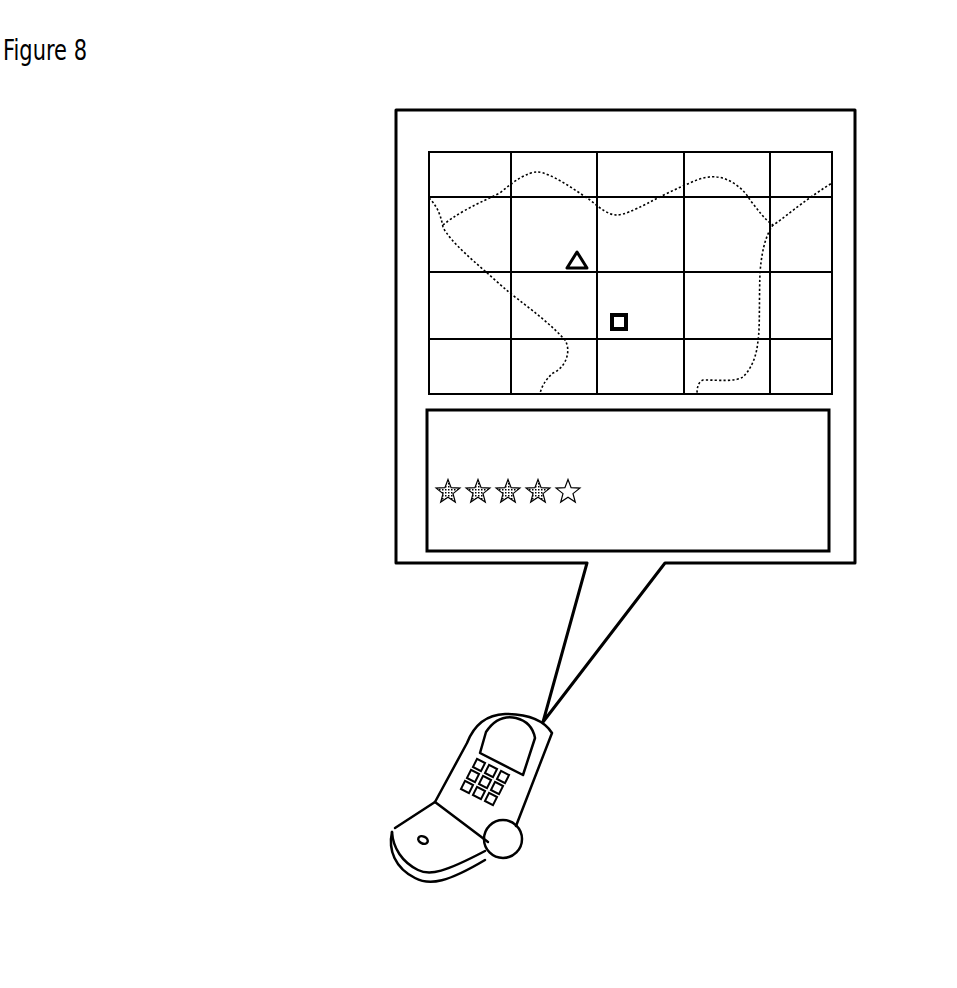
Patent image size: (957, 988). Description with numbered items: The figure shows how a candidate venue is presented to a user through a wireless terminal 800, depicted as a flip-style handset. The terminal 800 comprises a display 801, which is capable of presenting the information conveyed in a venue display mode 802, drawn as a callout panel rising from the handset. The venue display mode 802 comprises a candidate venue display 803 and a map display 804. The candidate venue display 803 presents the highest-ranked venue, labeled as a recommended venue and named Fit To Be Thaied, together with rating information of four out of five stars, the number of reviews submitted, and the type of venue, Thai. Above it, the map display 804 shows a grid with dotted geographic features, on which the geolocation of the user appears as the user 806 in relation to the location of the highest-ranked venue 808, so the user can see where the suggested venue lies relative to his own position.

The wireless terminal 800 is at (519, 789).
The display 801 is at (505, 738).
The venue display mode 802 is at (857, 172).
The candidate venue display 803 is at (695, 468).
The map display 804 is at (752, 165).
The user 806 is at (611, 314).
The highest-ranked venue 808 is at (575, 254).